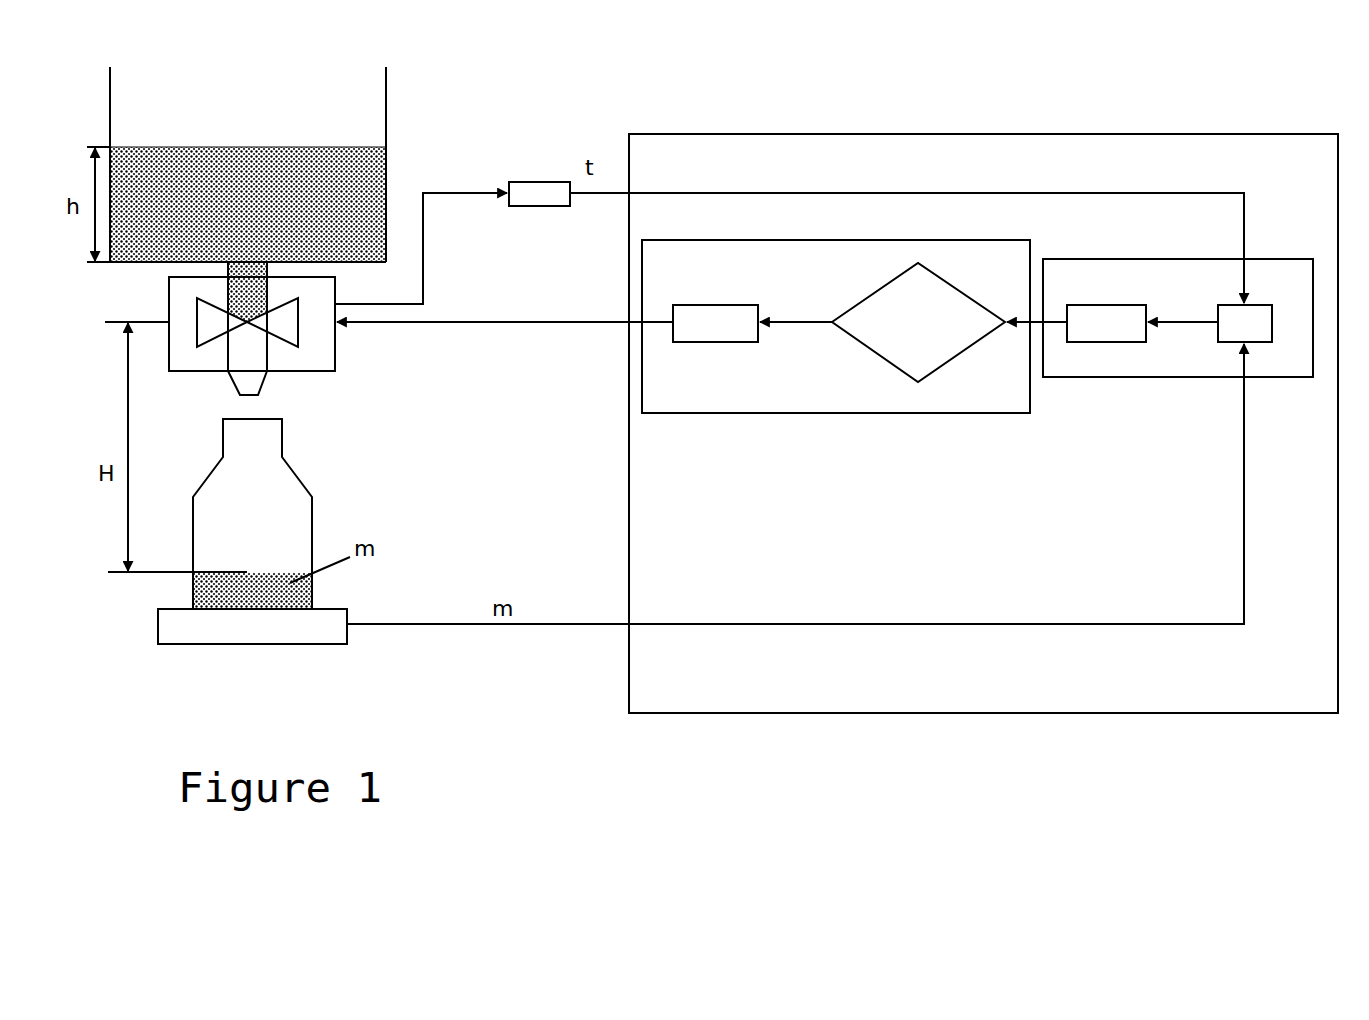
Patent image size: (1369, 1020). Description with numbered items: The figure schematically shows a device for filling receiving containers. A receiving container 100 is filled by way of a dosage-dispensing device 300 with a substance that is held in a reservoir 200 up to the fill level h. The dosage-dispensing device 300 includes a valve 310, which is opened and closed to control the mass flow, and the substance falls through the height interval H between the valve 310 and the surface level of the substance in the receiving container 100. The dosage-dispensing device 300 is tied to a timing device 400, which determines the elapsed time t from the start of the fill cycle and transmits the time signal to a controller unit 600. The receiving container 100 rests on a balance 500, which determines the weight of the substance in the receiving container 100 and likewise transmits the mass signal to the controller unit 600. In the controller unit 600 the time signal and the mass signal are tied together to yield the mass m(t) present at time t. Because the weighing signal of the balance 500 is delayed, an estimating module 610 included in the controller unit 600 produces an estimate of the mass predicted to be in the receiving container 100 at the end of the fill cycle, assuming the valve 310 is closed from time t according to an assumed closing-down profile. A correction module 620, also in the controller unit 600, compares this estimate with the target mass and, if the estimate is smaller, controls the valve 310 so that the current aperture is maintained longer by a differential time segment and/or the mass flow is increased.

The receiving container 100 is at (273, 483).
The reservoir 200 is at (386, 167).
The dosage-dispensing device 300 is at (307, 371).
The valve 310 is at (197, 312).
The timing device 400 is at (542, 182).
The balance 500 is at (253, 644).
The controller unit 600 is at (694, 169).
The estimating module 610 is at (1094, 294).
The correction module 620 is at (694, 277).